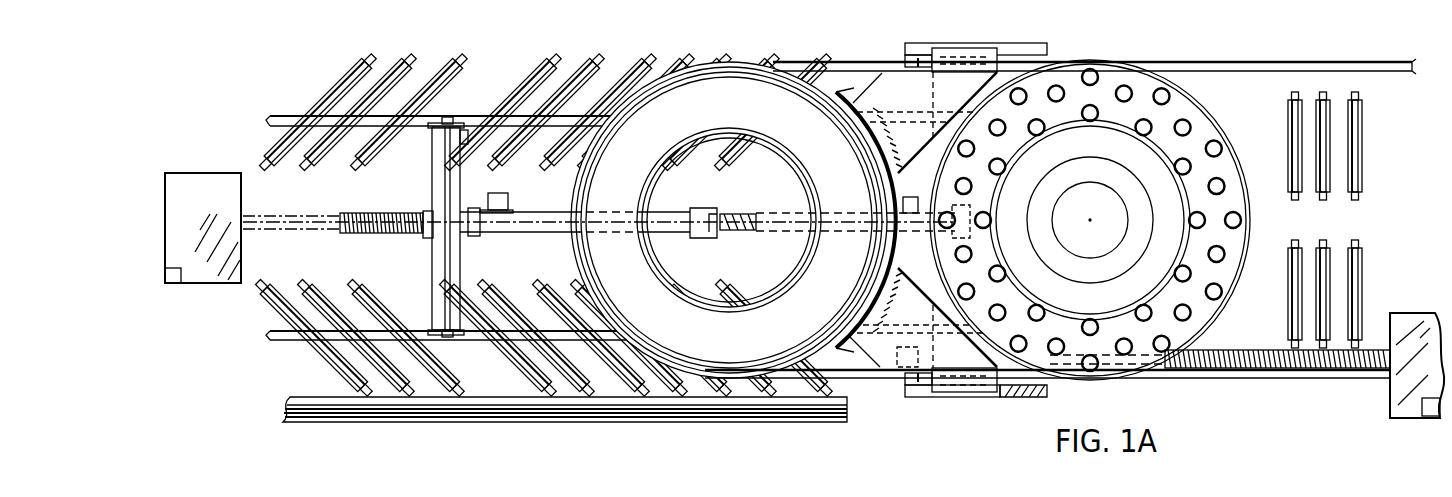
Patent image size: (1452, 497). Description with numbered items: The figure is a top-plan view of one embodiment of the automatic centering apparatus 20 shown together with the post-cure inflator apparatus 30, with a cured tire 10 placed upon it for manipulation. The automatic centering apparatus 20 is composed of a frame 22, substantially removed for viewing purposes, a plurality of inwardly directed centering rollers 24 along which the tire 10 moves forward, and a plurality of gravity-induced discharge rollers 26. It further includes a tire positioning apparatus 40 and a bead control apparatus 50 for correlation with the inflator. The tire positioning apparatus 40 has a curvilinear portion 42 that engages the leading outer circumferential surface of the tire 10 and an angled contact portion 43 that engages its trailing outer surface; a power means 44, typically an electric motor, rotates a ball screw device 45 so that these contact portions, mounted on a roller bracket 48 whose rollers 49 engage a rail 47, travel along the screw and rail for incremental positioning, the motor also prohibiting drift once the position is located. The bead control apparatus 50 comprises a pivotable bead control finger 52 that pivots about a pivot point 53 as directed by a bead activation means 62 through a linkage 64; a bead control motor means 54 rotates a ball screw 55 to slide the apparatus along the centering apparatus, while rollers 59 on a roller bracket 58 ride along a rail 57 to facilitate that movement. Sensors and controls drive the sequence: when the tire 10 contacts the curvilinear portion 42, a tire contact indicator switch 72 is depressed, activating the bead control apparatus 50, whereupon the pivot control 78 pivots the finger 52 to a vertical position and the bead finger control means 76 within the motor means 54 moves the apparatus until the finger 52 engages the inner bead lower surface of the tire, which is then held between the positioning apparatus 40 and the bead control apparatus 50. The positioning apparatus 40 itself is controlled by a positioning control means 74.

The cured tire 10 is at (750, 100).
The automatic centering apparatus 20 is at (493, 63).
The frame 22 is at (730, 410).
The inwardly directed centering rollers 24 is at (380, 66).
The gravity-induced discharge rollers 26 is at (1288, 113).
The post-cure inflator apparatus 30 is at (1118, 162).
The tire positioning apparatus 40 is at (940, 33).
The curvilinear portion 42 is at (843, 88).
The angled contact portion 43 is at (920, 137).
The power means 44 is at (1397, 418).
The ball screw device 45 is at (1310, 368).
The rail 47 is at (1197, 61).
The roller bracket 48 is at (1037, 43).
The rollers 49 is at (923, 387).
The bead control apparatus 50 is at (640, 152).
The bead control finger 52 is at (750, 213).
The pivot point 53 is at (705, 208).
The bead control motor means 54 is at (213, 278).
The ball screw 55 is at (272, 296).
The rail 57 is at (273, 337).
The roller bracket 58 is at (466, 134).
The rollers 59 is at (452, 117).
The bead activation means 62 is at (477, 222).
The linkage 64 is at (523, 238).
The tire contact indicator switch 72 is at (898, 272).
The positioning control means 74 is at (1435, 416).
The bead finger control means 76 is at (172, 283).
The pivot control 78 is at (505, 193).